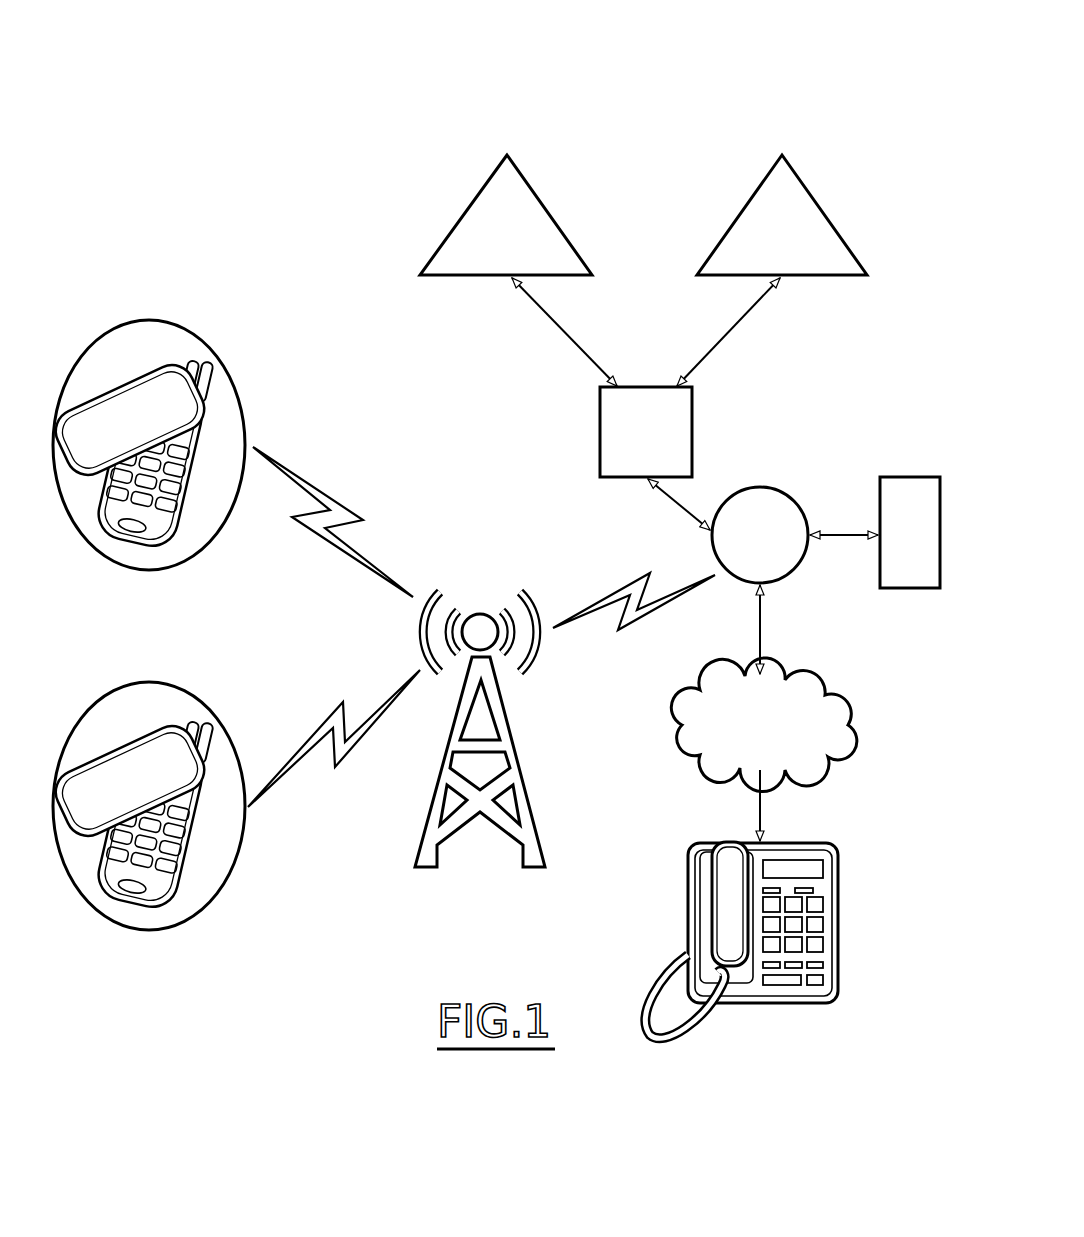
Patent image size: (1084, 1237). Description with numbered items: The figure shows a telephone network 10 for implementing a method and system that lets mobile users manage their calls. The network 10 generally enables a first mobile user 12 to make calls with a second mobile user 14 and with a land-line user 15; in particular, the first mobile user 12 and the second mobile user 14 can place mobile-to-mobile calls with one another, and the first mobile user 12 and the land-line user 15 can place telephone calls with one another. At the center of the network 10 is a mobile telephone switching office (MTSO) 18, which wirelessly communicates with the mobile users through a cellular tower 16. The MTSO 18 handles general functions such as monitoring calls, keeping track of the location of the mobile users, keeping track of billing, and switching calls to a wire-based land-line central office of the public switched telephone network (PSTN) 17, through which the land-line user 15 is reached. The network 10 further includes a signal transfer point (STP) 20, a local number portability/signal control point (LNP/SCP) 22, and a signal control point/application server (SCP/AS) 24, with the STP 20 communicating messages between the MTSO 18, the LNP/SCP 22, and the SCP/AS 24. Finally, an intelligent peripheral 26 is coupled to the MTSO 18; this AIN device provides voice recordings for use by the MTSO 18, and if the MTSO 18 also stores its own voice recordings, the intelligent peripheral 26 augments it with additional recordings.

The telephone network 10 is at (833, 46).
The first mobile user 12 is at (215, 893).
The second mobile user 14 is at (218, 535).
The land-line user 15 is at (777, 1003).
The cellular tower 16 is at (545, 832).
The public switched telephone network (PSTN) 17 is at (850, 699).
The mobile telephone switching office (MTSO) 18 is at (778, 489).
The signal transfer point (STP) 20 is at (692, 432).
The local number portability/signal control point (LNP/SCP) 22 is at (540, 196).
The signal control point/application server (SCP/AS) 24 is at (813, 193).
The intelligent peripheral 26 is at (905, 477).